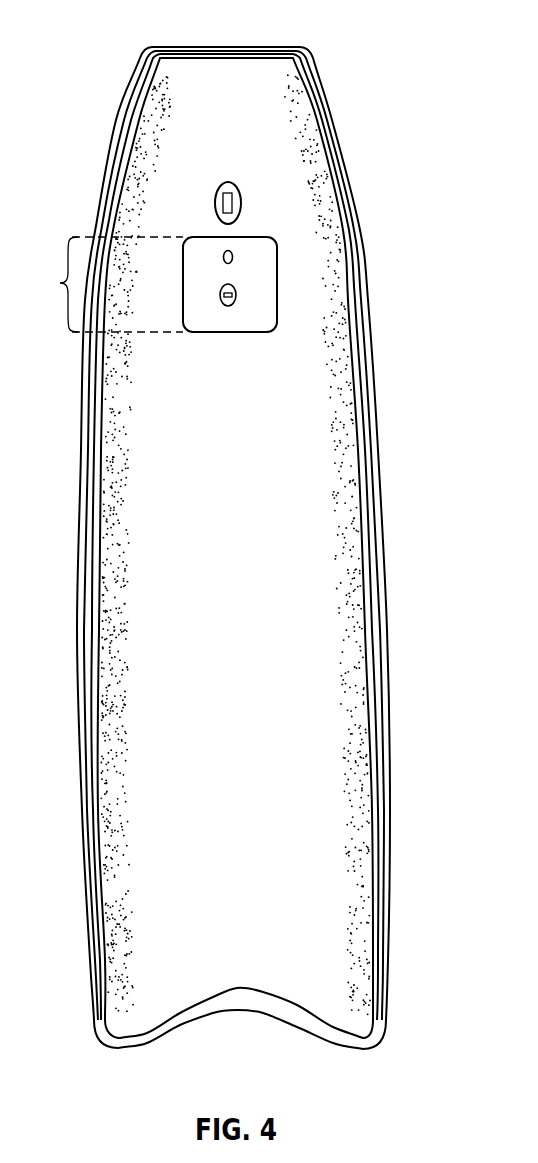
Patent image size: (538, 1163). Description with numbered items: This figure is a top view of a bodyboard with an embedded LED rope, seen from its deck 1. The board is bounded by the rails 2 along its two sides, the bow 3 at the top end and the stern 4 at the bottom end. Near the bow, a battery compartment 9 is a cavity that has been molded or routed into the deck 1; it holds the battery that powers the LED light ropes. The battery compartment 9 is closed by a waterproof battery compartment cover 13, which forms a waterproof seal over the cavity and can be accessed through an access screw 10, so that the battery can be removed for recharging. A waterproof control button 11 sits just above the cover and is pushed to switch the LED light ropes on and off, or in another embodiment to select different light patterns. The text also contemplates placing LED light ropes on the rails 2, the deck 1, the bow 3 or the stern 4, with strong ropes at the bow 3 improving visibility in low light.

The deck 1 is at (113, 487).
The rails 2 is at (78, 378).
The bow 3 is at (233, 46).
The stern 4 is at (157, 1038).
The battery compartment 9 is at (108, 284).
The access screw 10 is at (230, 306).
The waterproof control button 11 is at (232, 250).
The battery compartment cover 13 is at (266, 258).